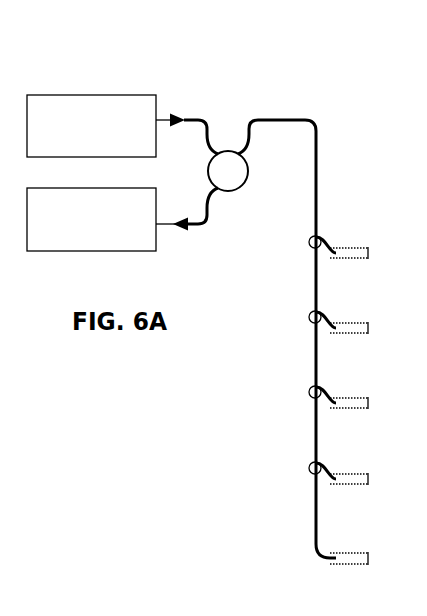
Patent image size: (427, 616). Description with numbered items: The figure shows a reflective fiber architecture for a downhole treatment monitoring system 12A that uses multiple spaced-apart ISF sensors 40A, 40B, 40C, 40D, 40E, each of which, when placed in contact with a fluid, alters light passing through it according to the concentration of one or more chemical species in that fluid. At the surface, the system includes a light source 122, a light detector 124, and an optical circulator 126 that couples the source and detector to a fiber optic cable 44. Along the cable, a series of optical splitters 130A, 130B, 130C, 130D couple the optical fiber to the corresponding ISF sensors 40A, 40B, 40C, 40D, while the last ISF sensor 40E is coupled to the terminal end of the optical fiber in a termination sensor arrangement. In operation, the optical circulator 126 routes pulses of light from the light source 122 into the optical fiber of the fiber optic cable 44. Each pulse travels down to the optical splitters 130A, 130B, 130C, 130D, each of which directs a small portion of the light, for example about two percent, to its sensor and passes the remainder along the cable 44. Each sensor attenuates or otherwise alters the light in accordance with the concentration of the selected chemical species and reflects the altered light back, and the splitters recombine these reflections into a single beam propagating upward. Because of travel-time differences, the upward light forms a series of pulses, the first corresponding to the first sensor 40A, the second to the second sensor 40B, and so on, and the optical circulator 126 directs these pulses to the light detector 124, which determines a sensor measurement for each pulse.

The downhole treatment monitoring system 12A is at (240, 62).
The light source 122 is at (157, 104).
The light detector 124 is at (157, 241).
The optical circulator 126 is at (243, 186).
The fiber optic cable 44 is at (283, 119).
The optical splitter 130A is at (309, 242).
The optical splitter 130B is at (309, 317).
The optical splitter 130C is at (309, 392).
The optical splitter 130D is at (309, 468).
The ISF sensor 40A is at (360, 241).
The ISF sensor 40B is at (360, 316).
The ISF sensor 40C is at (360, 391).
The ISF sensor 40D is at (360, 467).
The ISF sensor 40E is at (356, 549).